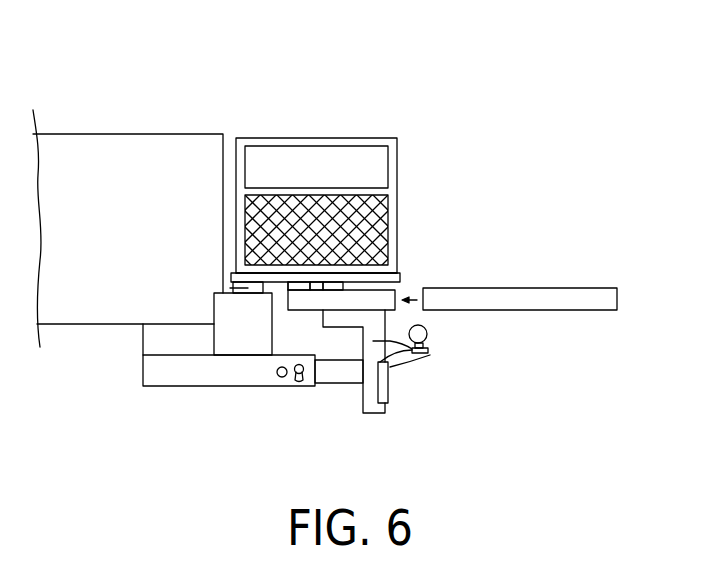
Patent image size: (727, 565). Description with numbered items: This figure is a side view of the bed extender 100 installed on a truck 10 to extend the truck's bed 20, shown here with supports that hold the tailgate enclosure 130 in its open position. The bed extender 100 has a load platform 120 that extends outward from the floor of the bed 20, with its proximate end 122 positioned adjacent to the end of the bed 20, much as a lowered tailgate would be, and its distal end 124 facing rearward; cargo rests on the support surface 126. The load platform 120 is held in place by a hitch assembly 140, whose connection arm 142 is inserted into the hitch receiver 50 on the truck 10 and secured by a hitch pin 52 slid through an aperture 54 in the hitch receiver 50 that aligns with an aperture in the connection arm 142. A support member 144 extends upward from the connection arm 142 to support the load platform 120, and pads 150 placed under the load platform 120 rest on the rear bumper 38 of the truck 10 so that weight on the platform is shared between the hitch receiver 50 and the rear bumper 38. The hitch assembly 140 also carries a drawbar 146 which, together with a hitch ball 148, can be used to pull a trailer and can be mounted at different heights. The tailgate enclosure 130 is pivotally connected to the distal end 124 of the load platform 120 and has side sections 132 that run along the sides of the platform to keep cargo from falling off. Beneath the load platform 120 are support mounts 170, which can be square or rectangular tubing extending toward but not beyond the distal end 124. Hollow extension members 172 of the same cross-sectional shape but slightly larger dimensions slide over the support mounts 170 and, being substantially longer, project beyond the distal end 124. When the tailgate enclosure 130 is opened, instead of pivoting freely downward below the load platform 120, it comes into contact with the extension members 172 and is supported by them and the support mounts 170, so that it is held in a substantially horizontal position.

The truck 10 is at (158, 93).
The bed 20 is at (103, 133).
The rear bumper 38 is at (238, 320).
The hitch receiver 50 is at (177, 372).
The hitch pin 52 is at (307, 384).
The aperture 54 is at (275, 378).
The bed extender 100 is at (496, 114).
The load platform 120 is at (335, 272).
The proximate end 122 is at (233, 274).
The distal end 124 is at (400, 278).
The support surface 126 is at (285, 272).
The tailgate enclosure 130 is at (370, 137).
The side sections 132 is at (388, 197).
The hitch assembly 140 is at (385, 413).
The connection arm 142 is at (340, 373).
The support member 144 is at (430, 355).
The drawbar 146 is at (395, 360).
The hitch ball 148 is at (428, 332).
The pads 150 is at (230, 288).
The support mounts 170 is at (403, 290).
The extension members 172 is at (553, 288).